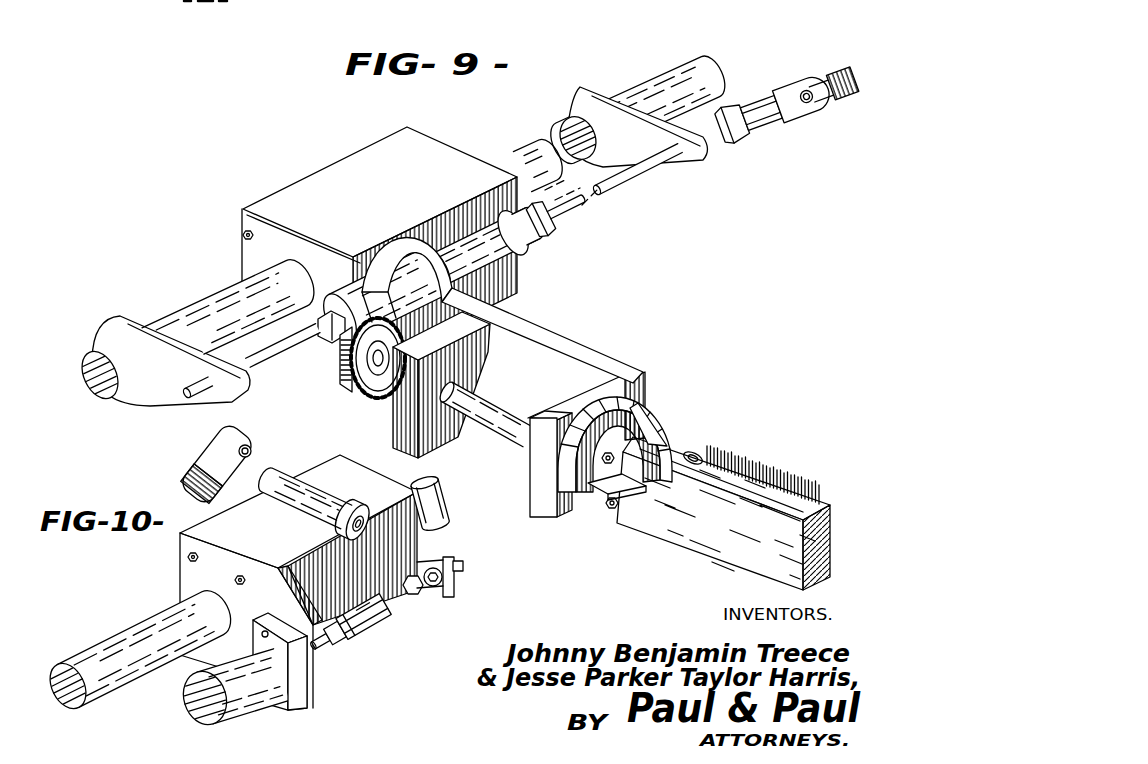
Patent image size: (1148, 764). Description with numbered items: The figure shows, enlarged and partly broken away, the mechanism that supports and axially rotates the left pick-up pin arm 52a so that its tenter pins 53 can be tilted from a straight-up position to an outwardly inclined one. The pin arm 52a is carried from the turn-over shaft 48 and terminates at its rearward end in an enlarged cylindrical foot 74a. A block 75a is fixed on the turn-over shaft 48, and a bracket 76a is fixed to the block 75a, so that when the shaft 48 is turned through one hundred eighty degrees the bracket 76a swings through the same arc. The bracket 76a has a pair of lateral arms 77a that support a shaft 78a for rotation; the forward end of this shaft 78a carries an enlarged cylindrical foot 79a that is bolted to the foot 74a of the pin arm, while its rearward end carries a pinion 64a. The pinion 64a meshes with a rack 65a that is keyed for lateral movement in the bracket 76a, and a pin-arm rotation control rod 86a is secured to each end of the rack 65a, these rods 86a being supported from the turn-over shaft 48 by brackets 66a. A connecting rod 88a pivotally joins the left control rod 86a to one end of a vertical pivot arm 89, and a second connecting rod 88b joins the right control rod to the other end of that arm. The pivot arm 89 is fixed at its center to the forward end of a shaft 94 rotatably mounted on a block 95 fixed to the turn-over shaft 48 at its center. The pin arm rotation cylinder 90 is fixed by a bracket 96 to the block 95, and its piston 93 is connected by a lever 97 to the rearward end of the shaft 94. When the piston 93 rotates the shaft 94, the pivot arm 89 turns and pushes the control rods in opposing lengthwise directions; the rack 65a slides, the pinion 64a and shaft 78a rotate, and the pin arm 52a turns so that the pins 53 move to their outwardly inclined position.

In FIG. 9, the turn-over shaft 48 is at (217, 310).
In FIG. 10, the turn-over shaft 48 is at (100, 665).
In FIG. 9, the pick-up pin arm 52a is at (720, 535).
In FIG. 9, the tenter pins 53 is at (805, 492).
In FIG. 9, the pinion 64a is at (363, 383).
In FIG. 9, the rack 65a is at (367, 308).
In FIG. 9, the brackets 66a is at (167, 390).
In FIG. 9, the cylindrical foot 74a is at (583, 478).
In FIG. 9, the block 75a is at (337, 176).
In FIG. 9, the bracket 76a is at (553, 345).
In FIG. 9, the lateral arms 77a is at (540, 466).
In FIG. 9, the shaft 78a is at (503, 403).
In FIG. 9, the cylindrical foot 79a is at (560, 478).
In FIG. 9, the pin-arm rotation control rods 86a is at (260, 363).
In FIG. 9, the connecting rod 88a is at (843, 88).
In FIG. 10, the connecting rod 88b is at (193, 482).
In FIG. 10, the pivot arm 89 is at (255, 462).
In FIG. 10, the pin arm rotation cylinder 90 is at (193, 699).
In FIG. 10, the piston 93 is at (322, 642).
In FIG. 10, the shaft 94 is at (370, 524).
In FIG. 10, the block 95 is at (320, 473).
In FIG. 10, the bracket 96 is at (193, 577).
In FIG. 10, the lever 97 is at (363, 563).